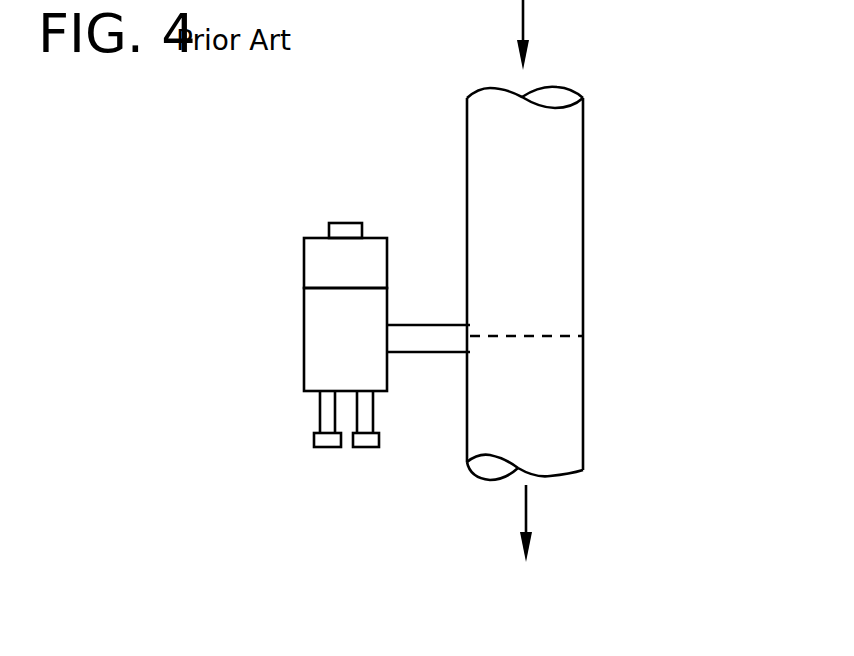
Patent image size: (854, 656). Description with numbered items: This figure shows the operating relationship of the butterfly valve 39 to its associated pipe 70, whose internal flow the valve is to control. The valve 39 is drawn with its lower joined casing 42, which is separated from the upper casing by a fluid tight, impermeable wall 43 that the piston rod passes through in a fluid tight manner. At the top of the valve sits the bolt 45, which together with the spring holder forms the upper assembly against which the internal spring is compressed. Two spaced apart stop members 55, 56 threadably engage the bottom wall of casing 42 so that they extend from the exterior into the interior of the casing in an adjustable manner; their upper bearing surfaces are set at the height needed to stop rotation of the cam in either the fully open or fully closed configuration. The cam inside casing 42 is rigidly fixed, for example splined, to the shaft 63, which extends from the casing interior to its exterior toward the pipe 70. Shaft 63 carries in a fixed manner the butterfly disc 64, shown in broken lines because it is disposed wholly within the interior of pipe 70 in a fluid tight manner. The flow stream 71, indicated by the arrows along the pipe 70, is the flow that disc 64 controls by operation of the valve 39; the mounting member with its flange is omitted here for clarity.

The valve 39 is at (198, 355).
The lower joined casing 42 is at (304, 360).
The fluid tight wall 43 is at (327, 288).
The bolt 45 is at (343, 222).
The stop member 55 is at (316, 421).
The stop member 56 is at (382, 420).
The shaft 63 is at (403, 325).
The butterfly disc 64 is at (540, 336).
The pipe 70 is at (675, 166).
The flow stream 71 is at (523, 3).